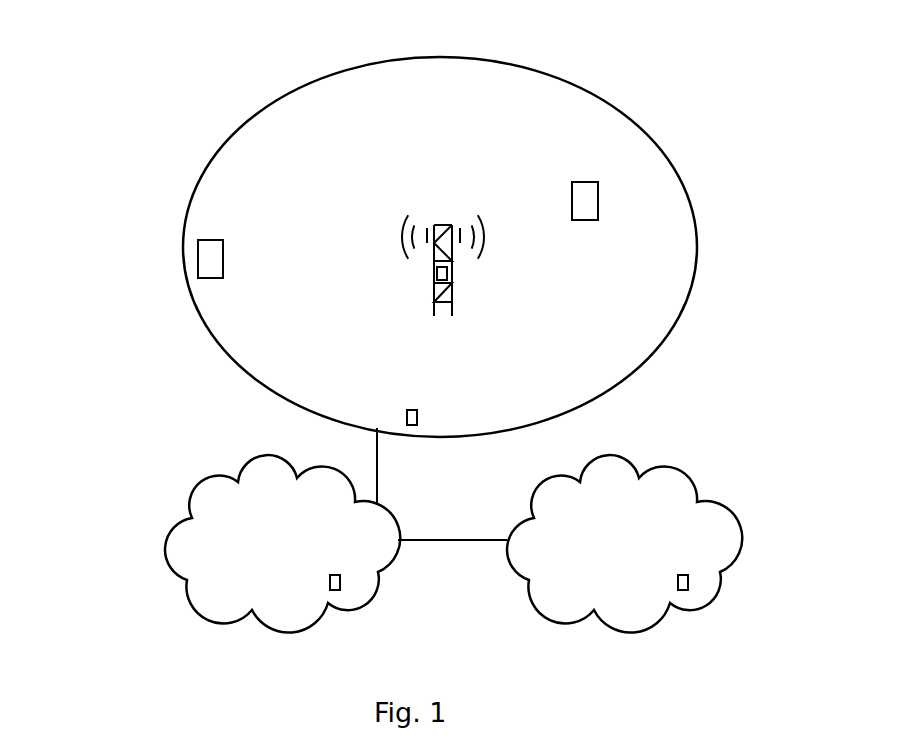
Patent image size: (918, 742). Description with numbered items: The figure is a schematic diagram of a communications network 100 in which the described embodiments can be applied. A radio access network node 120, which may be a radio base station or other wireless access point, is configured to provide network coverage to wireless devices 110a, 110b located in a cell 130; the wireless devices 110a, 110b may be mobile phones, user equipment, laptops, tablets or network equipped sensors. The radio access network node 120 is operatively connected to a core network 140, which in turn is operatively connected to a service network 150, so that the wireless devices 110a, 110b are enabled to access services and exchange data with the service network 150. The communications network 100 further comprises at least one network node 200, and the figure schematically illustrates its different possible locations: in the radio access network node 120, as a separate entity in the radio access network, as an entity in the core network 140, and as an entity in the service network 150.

The communications network 100 is at (686, 66).
The wireless device 110a is at (223, 257).
The wireless device 110b is at (572, 185).
The radio access network node 120 is at (452, 303).
The cell 130 is at (232, 359).
The core network 140 is at (252, 511).
The service network 150 is at (601, 508).
The network node 200 is at (437, 278).